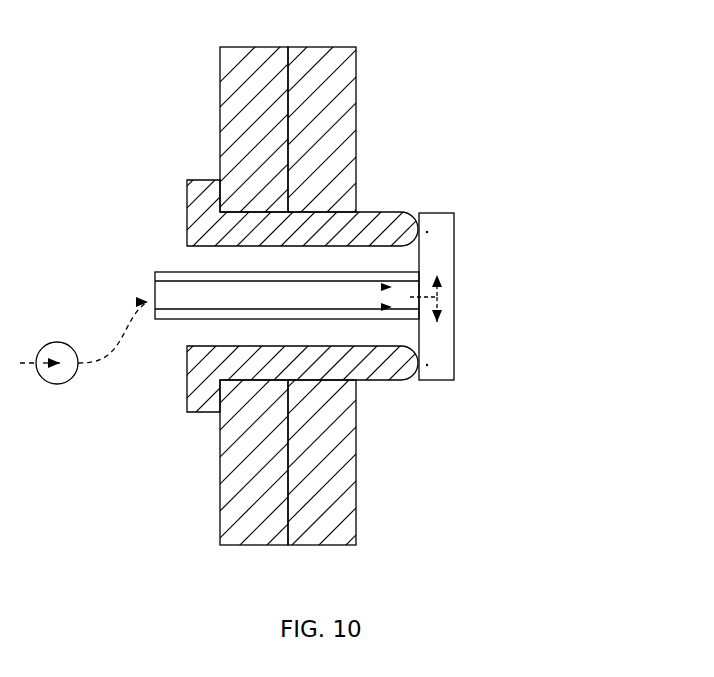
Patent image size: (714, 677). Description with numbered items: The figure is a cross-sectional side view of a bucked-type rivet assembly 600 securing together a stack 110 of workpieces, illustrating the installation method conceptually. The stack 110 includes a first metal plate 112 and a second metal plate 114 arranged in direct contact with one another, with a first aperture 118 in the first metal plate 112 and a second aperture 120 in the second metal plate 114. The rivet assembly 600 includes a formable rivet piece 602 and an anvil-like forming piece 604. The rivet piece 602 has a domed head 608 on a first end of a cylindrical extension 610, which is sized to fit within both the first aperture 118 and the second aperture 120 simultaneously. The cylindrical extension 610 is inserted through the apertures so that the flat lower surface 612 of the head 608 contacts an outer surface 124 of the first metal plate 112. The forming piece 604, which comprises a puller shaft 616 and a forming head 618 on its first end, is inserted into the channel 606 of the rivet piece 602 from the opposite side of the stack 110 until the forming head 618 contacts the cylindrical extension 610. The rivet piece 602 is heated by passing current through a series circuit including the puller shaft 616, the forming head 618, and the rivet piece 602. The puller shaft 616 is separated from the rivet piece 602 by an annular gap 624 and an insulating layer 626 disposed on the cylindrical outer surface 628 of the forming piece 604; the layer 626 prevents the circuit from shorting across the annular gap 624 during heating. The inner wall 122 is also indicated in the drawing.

The stack 110 is at (335, 560).
The first metal plate 112 is at (232, 58).
The second metal plate 114 is at (337, 60).
The first aperture 118 is at (257, 212).
The second aperture 120 is at (322, 212).
The inner wall surface 122 is at (356, 382).
The outer surface 124 is at (220, 520).
The rivet assembly 600 is at (180, 397).
The rivet piece 602 is at (388, 212).
The forming piece 604 is at (467, 305).
The channel 606 is at (207, 246).
The head 608 is at (207, 396).
The cylindrical extension 610 is at (330, 362).
The flat lower surface 612 is at (222, 187).
The puller shaft 616 is at (172, 294).
The forming head 618 is at (443, 232).
The annular gap 624 is at (192, 328).
The layer 626 is at (407, 317).
The cylindrical outer surface 628 is at (160, 317).